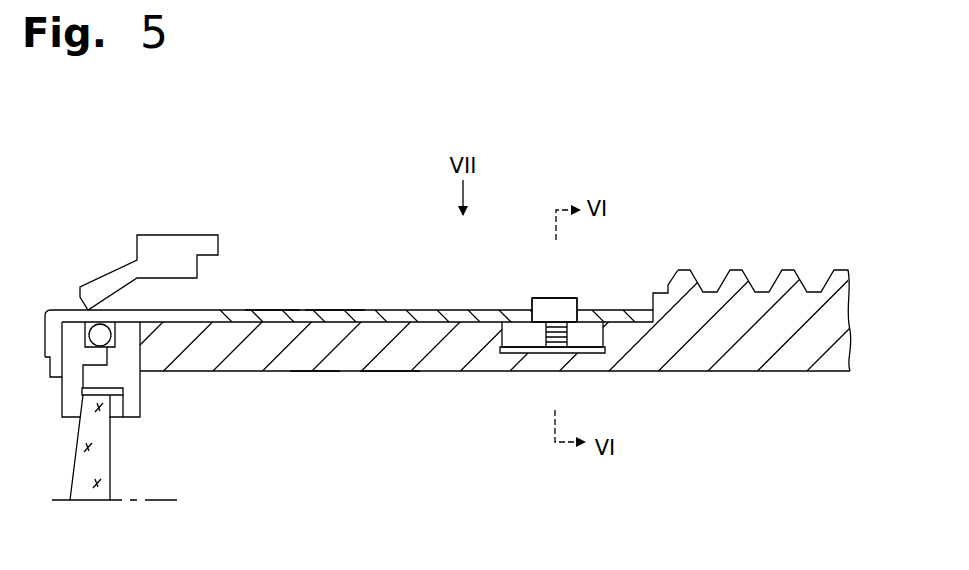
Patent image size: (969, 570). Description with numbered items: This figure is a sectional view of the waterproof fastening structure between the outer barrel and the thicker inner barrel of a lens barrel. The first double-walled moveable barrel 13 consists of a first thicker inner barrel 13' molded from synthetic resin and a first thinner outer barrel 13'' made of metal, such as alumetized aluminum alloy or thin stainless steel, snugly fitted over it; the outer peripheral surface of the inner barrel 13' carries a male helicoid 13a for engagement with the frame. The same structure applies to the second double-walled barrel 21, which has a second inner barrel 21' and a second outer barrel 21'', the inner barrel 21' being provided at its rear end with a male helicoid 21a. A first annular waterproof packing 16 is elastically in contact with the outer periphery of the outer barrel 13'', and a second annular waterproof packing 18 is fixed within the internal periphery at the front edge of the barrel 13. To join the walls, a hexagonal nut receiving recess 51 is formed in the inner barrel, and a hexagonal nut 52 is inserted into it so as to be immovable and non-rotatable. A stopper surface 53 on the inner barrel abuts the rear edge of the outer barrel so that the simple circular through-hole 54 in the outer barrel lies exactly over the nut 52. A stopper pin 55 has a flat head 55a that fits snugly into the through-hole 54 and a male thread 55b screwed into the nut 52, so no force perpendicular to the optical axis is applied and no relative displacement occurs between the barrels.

The first annular waterproof packing 16 is at (149, 252).
The second annular waterproof packing 18 is at (143, 257).
The second double-walled barrel 21 is at (484, 195).
The second inner barrel 21' is at (272, 274).
The second outer barrel 21'' is at (335, 260).
The first double-walled moveable barrel 13 is at (507, 355).
The first inner barrel 13' is at (390, 390).
The first outer barrel 13'' is at (320, 365).
The male helicoid 13a is at (790, 280).
The male helicoid 21a is at (778, 297).
The hexagonal nut receiving recess 51 is at (522, 338).
The hexagonal nut 52 is at (583, 332).
The stopper surface 53 is at (645, 320).
The through-hole 54 is at (542, 313).
The stopper pin 55 is at (563, 305).
The flat head 55a is at (614, 272).
The male thread 55b is at (558, 342).